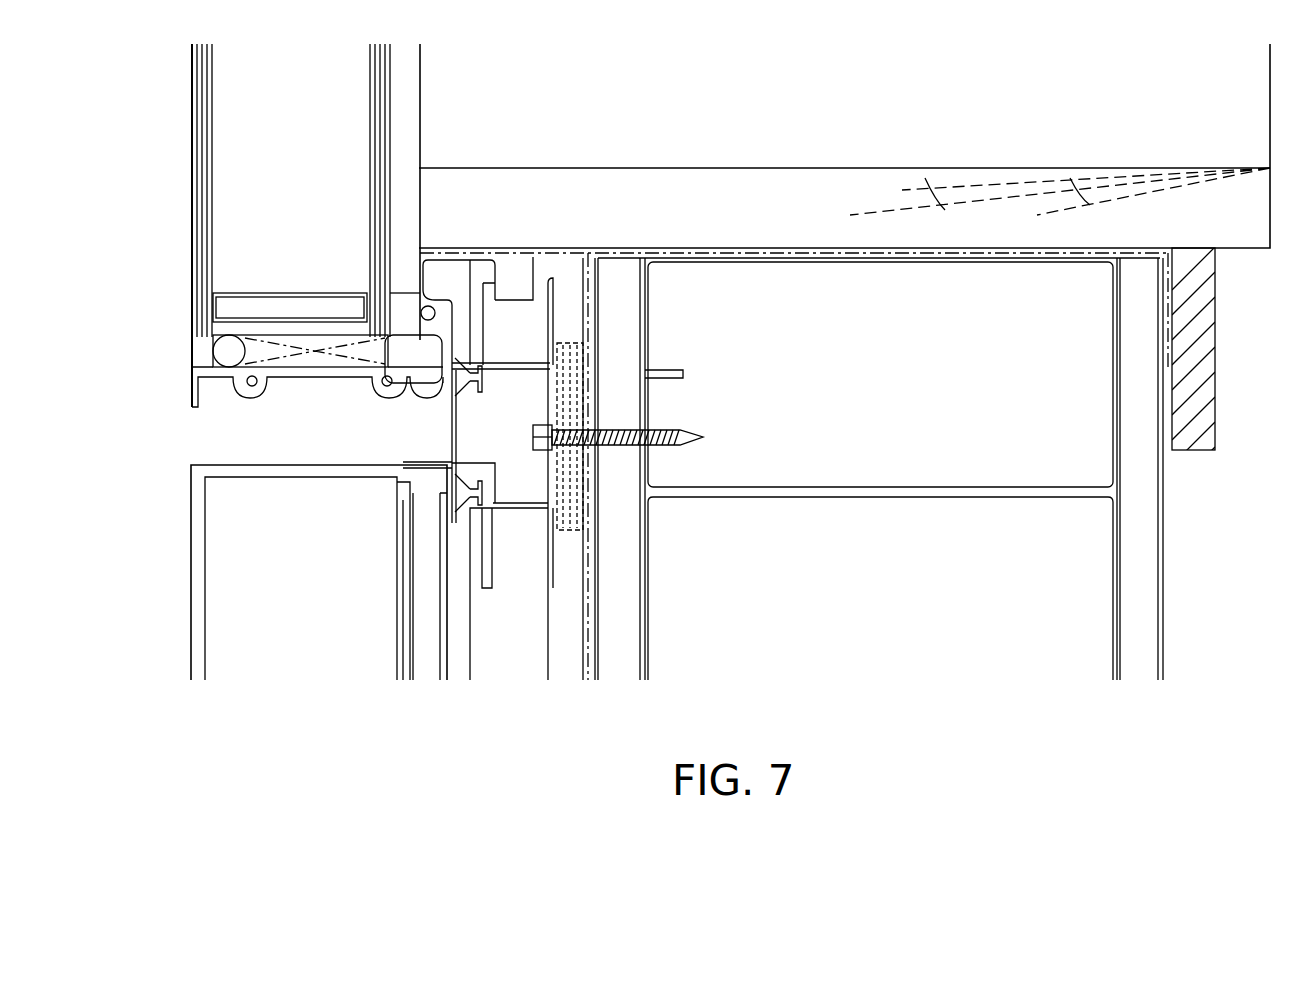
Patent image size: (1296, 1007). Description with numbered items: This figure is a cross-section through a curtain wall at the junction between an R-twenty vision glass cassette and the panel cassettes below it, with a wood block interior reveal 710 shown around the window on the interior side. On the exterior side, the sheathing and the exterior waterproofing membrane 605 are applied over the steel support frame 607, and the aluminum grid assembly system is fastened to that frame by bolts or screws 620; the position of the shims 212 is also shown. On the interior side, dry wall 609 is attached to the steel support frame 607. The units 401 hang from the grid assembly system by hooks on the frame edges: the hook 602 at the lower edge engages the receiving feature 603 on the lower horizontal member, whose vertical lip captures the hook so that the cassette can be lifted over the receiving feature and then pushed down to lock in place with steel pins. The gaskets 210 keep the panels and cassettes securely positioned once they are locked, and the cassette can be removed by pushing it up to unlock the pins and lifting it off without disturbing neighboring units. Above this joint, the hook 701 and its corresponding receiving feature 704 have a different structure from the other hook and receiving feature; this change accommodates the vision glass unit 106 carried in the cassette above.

The vision glass unit 106 is at (192, 117).
The units 401 is at (191, 618).
The hook 602 is at (458, 262).
The receiving feature 603 is at (500, 328).
The shims 212 is at (567, 343).
The exterior waterproofing membrane 605 is at (651, 252).
The steel support frame 607 is at (945, 482).
The bolts or screws 620 is at (668, 428).
The dry wall 609 is at (1150, 590).
The wood block interior reveal 710 is at (1003, 168).
The hook 701 is at (418, 462).
The receiving feature 704 is at (515, 512).
The gaskets 210 is at (463, 400).